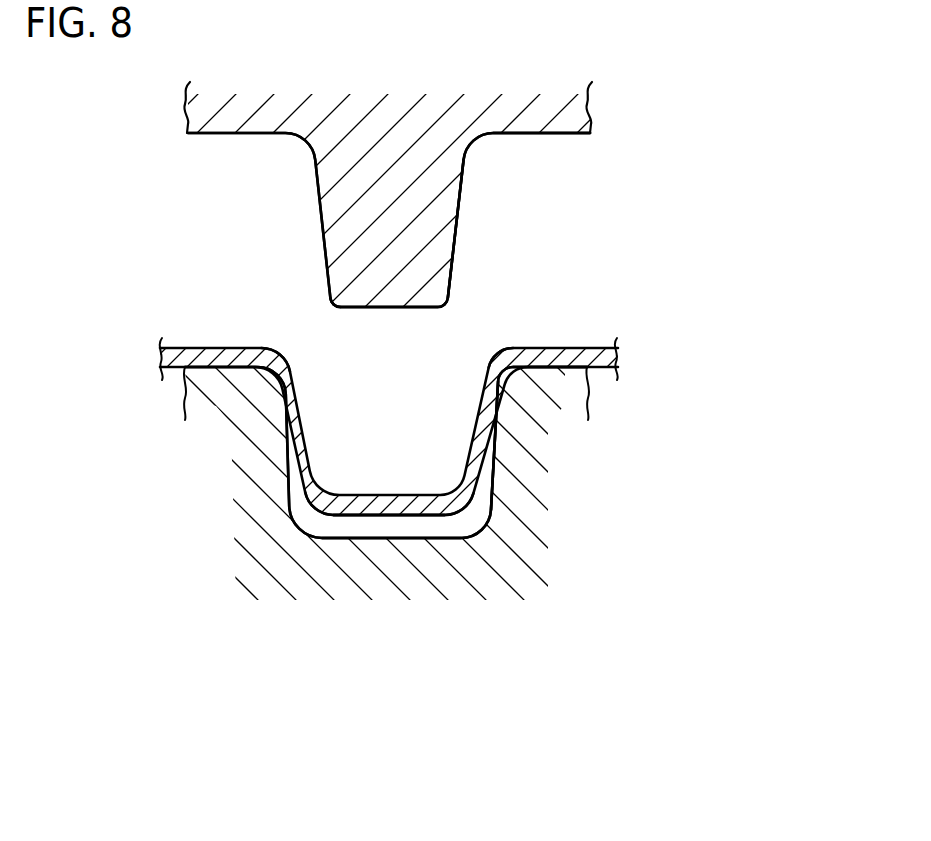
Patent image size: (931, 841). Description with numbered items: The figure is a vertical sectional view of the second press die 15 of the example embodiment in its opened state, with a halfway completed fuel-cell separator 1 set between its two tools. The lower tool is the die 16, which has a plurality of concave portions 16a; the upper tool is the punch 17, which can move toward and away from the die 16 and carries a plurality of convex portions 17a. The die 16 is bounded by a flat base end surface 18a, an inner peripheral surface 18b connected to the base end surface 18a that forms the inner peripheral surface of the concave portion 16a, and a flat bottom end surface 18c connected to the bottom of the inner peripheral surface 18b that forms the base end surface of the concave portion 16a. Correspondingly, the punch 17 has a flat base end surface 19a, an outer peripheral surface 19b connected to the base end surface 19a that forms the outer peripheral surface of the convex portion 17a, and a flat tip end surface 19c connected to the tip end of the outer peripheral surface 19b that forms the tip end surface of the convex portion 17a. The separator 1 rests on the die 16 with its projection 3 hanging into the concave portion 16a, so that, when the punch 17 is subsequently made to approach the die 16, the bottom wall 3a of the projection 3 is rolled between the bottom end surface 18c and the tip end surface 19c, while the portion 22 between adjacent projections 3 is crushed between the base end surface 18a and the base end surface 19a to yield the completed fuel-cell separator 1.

The fuel-cell separator 1 is at (646, 368).
The projection 3 is at (442, 517).
The bottom wall 3a is at (343, 505).
The second press die 15 is at (684, 240).
The die 16 is at (547, 463).
The concave portion 16a is at (352, 540).
The punch 17 is at (592, 85).
The convex portion 17a is at (388, 310).
The base end surface 18a is at (565, 347).
The inner peripheral surface 18b is at (476, 452).
The bottom end surface 18c is at (412, 523).
The base end surface 19a is at (546, 134).
The outer peripheral surface 19b is at (462, 205).
The tip end surface 19c is at (349, 305).
The portion between adjacent projections 22 is at (518, 346).